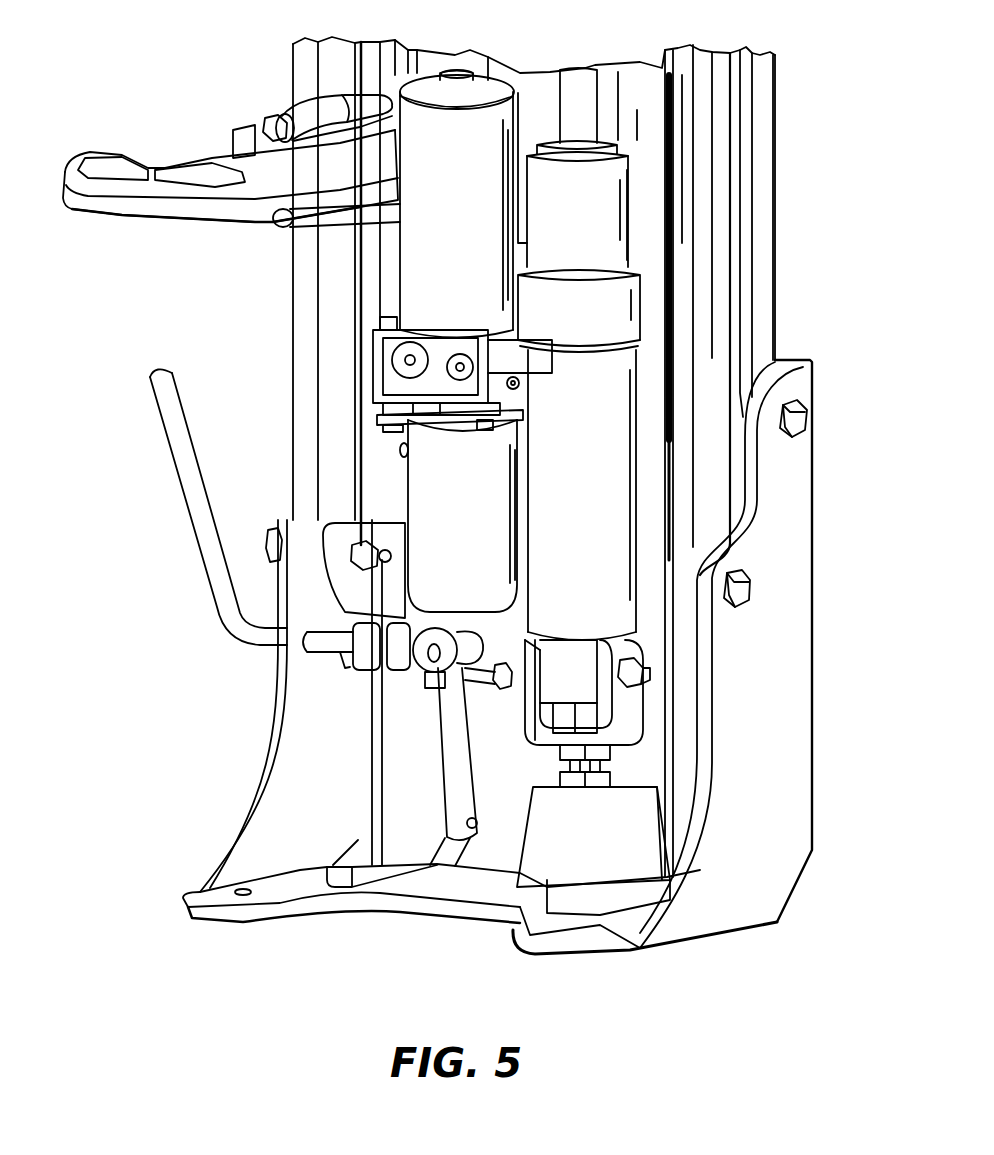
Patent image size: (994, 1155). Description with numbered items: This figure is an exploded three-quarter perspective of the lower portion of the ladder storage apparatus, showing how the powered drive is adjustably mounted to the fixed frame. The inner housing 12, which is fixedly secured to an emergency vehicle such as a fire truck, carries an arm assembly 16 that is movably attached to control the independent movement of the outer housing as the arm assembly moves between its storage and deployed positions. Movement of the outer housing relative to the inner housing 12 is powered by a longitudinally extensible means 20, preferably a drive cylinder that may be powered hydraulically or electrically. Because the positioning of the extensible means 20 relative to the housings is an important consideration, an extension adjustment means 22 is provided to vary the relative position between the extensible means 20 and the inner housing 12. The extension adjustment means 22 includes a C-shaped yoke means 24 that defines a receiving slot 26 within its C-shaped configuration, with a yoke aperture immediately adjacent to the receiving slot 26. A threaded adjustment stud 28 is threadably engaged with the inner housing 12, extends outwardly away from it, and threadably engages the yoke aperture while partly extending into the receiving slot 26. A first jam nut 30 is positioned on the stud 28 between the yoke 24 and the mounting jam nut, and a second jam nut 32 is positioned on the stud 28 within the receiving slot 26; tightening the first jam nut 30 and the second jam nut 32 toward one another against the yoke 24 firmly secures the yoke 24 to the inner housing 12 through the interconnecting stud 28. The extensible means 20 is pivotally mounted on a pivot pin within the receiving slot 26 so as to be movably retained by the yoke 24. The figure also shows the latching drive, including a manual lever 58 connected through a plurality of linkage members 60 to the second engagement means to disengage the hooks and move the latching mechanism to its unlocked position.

The inner housing 12 is at (802, 497).
The arm assembly 16 is at (298, 315).
The longitudinally extensible means 20 is at (432, 496).
The extension adjustment means 22 is at (633, 723).
The C-shaped yoke means 24 is at (528, 717).
The receiving slot 26 is at (587, 702).
The threaded adjustment stud 28 is at (600, 763).
The first jam nut 30 is at (548, 780).
The second jam nut 32 is at (558, 753).
The manual lever 58 is at (192, 531).
The linkage members 60 is at (410, 663).